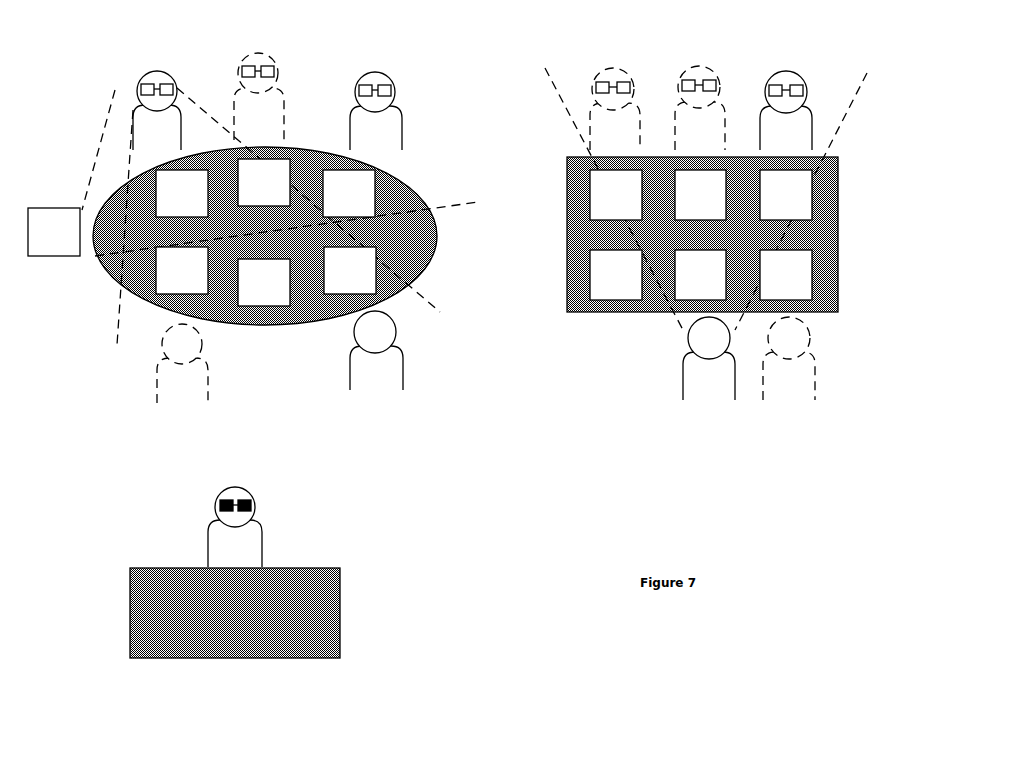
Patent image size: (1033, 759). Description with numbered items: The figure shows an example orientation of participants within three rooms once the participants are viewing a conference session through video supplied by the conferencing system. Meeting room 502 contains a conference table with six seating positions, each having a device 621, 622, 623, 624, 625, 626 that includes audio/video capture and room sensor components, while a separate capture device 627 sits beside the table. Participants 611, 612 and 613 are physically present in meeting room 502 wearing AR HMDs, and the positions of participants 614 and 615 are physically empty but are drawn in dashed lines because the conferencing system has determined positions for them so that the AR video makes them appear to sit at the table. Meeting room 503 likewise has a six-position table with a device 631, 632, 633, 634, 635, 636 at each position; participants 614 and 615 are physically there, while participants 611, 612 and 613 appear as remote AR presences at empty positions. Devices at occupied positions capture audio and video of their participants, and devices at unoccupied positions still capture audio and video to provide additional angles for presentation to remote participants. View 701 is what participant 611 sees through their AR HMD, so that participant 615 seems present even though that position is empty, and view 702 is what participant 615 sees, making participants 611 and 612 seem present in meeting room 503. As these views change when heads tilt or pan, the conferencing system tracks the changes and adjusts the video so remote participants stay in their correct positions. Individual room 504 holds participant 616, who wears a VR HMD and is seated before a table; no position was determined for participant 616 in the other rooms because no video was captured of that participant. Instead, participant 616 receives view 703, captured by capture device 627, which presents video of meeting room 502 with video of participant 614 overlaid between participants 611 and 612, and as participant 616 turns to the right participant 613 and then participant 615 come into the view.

The meeting room 502 is at (80, 78).
The meeting room 503 is at (538, 80).
The individual room 504 is at (115, 492).
The view 701 is at (419, 299).
The view 702 is at (866, 76).
The view 703 is at (104, 140).
The participant 611 is at (386, 109).
The participant 612 is at (537, 108).
The participant 613 is at (582, 355).
The participant 614 is at (523, 101).
The participant 615 is at (446, 360).
The participant 616 is at (235, 527).
The device 621 is at (182, 193).
The device 622 is at (264, 182).
The device 623 is at (349, 193).
The device 624 is at (350, 270).
The device 625 is at (264, 282).
The device 626 is at (182, 270).
The capture device 627 is at (54, 232).
The device 631 is at (616, 195).
The device 632 is at (700, 195).
The device 633 is at (786, 195).
The device 634 is at (786, 275).
The device 635 is at (700, 275).
The device 636 is at (616, 275).